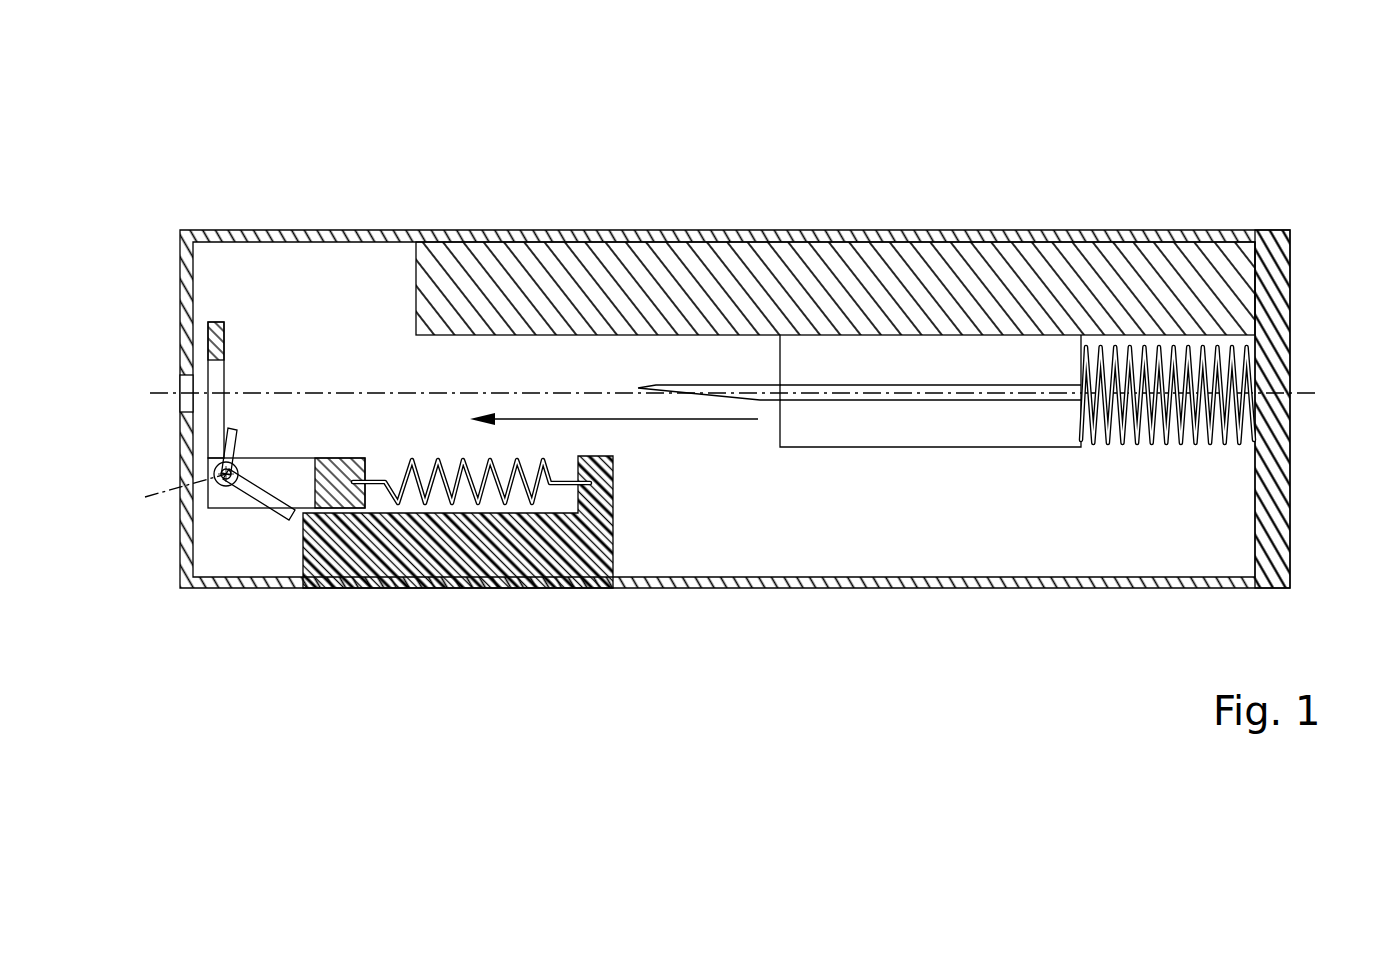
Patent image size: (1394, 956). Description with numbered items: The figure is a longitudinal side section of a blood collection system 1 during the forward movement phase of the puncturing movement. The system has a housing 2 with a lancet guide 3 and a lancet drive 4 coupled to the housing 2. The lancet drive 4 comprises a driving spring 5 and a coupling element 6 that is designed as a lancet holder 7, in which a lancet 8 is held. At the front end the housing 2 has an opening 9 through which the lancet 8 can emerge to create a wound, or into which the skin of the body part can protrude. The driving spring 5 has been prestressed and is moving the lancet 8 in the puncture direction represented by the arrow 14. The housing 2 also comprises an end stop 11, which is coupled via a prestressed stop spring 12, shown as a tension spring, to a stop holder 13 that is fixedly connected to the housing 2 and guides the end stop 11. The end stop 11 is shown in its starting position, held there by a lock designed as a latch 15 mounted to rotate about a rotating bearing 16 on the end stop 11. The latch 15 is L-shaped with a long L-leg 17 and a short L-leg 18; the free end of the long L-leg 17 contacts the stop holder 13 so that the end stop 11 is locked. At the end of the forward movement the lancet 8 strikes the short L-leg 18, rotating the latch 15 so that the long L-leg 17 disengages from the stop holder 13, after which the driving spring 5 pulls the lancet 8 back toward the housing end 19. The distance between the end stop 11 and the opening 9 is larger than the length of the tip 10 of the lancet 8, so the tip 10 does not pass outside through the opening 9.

The blood collection system 1 is at (1219, 178).
The housing 2 is at (1277, 240).
The lancet guide 3 is at (988, 252).
The lancet drive 4 is at (1096, 466).
The driving spring 5 is at (1200, 441).
The coupling element 6 is at (1016, 463).
The lancet holder 7 is at (933, 432).
The lancet 8 is at (877, 401).
The opening 9 is at (183, 380).
The tip 10 is at (740, 398).
The end stop 11 is at (222, 338).
The stop spring 12 is at (500, 502).
The stop holder 13 is at (378, 560).
The arrow 14 is at (660, 426).
The latch 15 is at (256, 505).
The rotating bearing 16 is at (169, 492).
The long L-leg 17 is at (284, 514).
The short L-leg 18 is at (222, 436).
The housing end 19 is at (1277, 288).